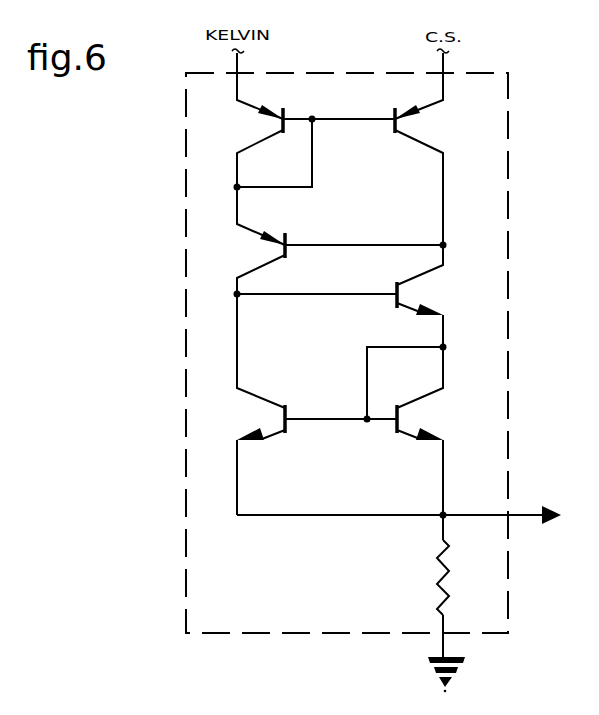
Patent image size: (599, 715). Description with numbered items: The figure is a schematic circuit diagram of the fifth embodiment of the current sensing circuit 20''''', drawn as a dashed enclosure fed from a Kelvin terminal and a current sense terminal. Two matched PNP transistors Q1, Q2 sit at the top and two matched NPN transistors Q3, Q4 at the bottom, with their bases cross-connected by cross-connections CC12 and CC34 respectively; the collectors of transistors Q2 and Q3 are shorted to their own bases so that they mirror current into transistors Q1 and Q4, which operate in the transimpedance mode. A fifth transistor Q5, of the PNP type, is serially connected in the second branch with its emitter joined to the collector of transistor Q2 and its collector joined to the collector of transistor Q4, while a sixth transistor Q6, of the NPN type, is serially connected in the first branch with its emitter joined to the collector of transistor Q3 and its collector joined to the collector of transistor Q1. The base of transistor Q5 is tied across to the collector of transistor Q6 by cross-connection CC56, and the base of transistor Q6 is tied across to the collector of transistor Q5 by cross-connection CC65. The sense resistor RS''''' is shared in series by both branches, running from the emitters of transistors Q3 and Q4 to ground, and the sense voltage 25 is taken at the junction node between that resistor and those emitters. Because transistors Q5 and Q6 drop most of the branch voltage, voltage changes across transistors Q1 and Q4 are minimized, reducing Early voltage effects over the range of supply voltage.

The current sensing circuit 20''''' is at (365, 332).
The sense voltage 25 is at (527, 513).
The transistor Q1 is at (428, 175).
The transistor Q2 is at (249, 146).
The transistor Q3 is at (430, 443).
The transistor Q4 is at (250, 404).
The fifth transistor Q5 is at (248, 240).
The sixth transistor Q6 is at (428, 314).
The cross-connection CC12 is at (323, 118).
The cross-connection CC56 is at (324, 237).
The cross-connection CC65 is at (298, 296).
The cross-connection CC34 is at (293, 418).
The sense resistor RS''''' is at (466, 577).